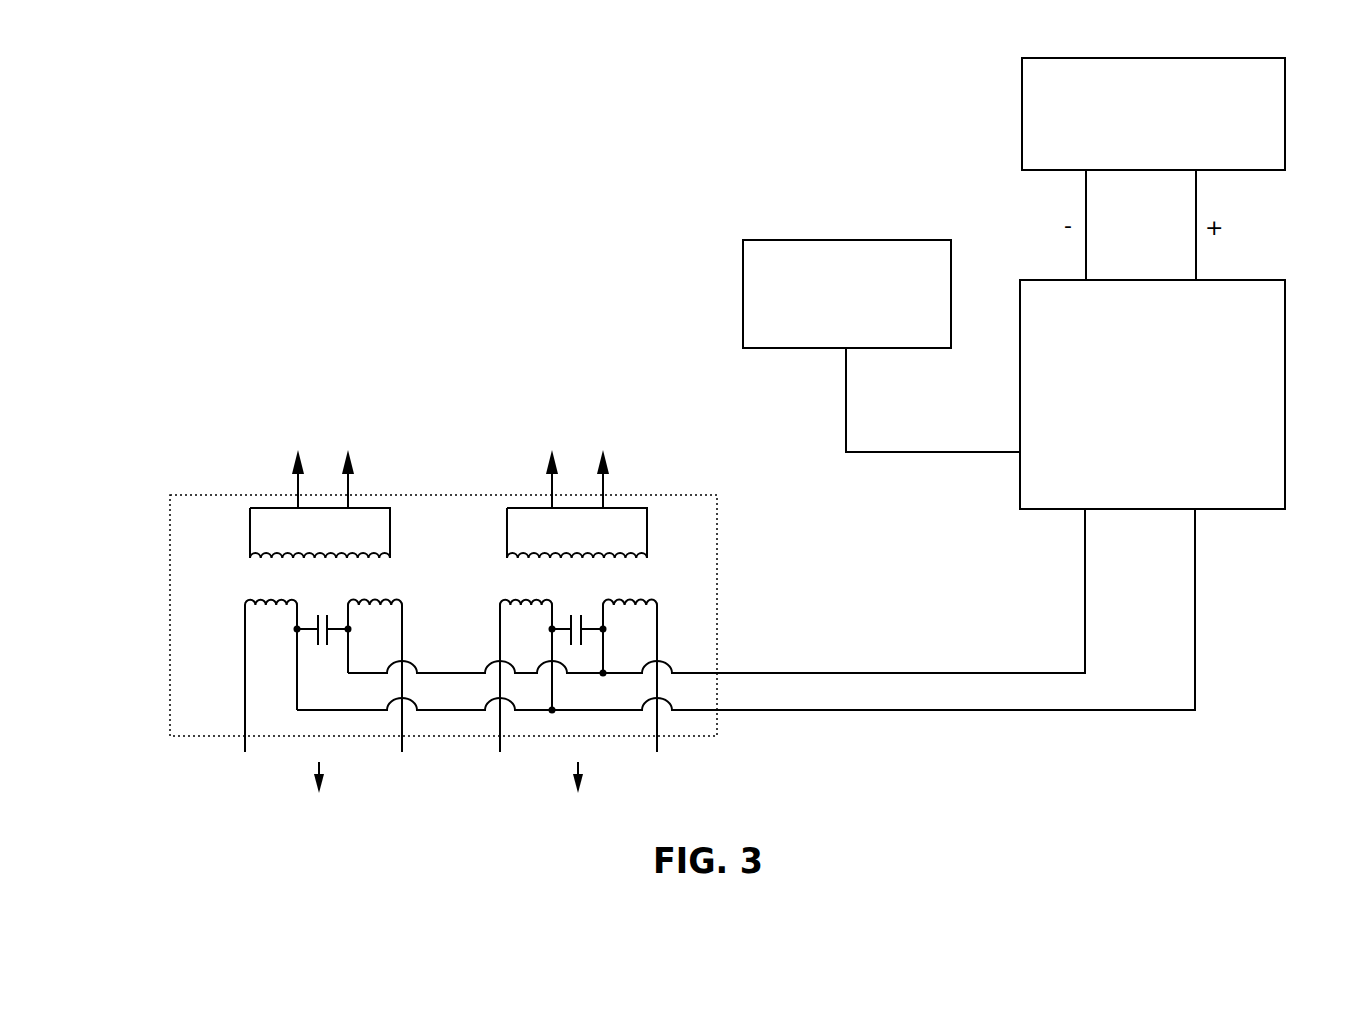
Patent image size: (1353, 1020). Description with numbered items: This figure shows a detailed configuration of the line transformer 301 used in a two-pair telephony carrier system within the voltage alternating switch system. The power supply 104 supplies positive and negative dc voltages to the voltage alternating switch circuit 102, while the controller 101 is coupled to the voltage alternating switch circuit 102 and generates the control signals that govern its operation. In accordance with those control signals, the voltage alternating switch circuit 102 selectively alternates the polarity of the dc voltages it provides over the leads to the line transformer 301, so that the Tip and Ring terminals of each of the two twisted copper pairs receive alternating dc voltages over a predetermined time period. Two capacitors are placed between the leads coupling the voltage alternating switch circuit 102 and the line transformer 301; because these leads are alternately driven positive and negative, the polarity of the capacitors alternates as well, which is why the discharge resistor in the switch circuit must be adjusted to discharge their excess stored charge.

The controller 101 is at (743, 293).
The voltage alternating switch circuit 102 is at (1287, 465).
The power supply 104 is at (1217, 57).
The line transformer 301 is at (170, 570).